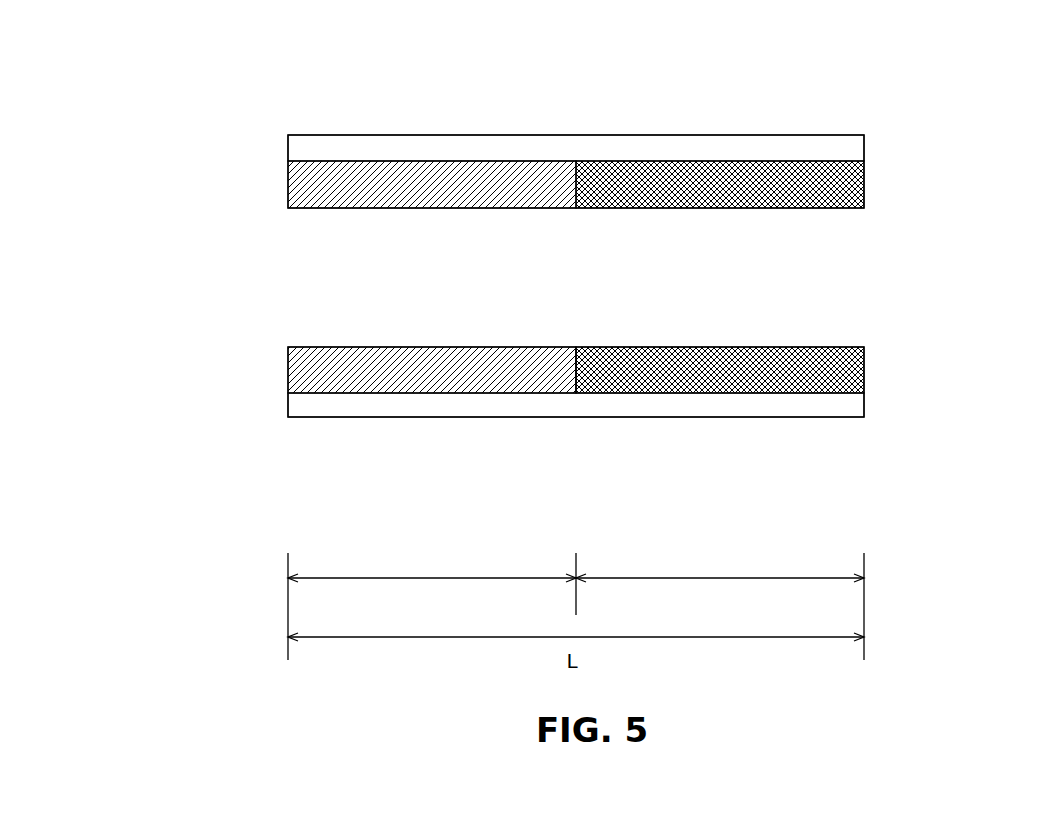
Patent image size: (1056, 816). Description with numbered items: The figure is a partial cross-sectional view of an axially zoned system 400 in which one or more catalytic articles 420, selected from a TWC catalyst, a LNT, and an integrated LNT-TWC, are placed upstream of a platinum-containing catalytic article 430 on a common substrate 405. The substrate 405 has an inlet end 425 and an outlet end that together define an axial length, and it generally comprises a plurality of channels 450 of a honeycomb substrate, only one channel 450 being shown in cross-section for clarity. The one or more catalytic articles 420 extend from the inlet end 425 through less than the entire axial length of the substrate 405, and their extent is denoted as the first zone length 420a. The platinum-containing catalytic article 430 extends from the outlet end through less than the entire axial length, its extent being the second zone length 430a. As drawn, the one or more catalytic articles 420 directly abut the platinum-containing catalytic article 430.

The axially zoned system 400 is at (262, 97).
The common substrate 405 is at (853, 156).
The one or more catalytic articles 420 is at (428, 173).
The inlet end 425 is at (315, 306).
The platinum-containing catalytic article 430 is at (768, 170).
The channels 450 is at (868, 299).
The first zone length 420a is at (432, 606).
The second zone length 430a is at (720, 606).